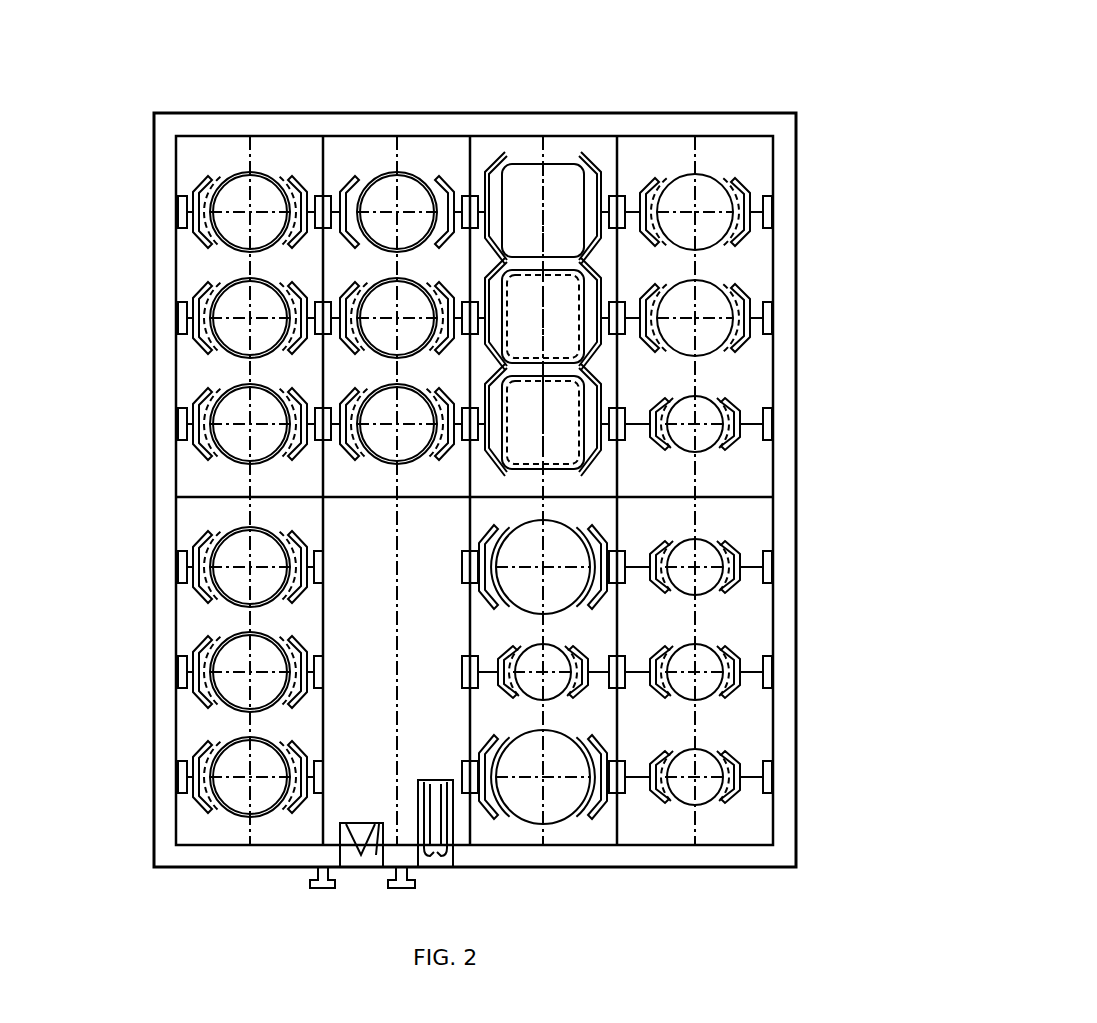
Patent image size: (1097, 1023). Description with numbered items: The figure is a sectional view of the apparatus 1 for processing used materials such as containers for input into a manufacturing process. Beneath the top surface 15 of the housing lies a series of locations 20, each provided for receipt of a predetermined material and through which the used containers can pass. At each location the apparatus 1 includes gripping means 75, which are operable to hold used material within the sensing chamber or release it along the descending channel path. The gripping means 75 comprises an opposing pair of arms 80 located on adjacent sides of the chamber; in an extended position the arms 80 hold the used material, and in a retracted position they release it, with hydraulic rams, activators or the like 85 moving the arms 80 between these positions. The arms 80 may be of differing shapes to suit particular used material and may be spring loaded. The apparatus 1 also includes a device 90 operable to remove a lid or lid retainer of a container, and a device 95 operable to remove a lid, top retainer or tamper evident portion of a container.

The apparatus 1 is at (206, 948).
The top surface 15 is at (752, 848).
The locations 20 is at (245, 330).
The gripping means 75 is at (465, 180).
The arms 80 is at (292, 184).
The hydraulic rams, activators or the like 85 is at (622, 190).
The device 90 is at (361, 855).
The device 95 is at (440, 862).